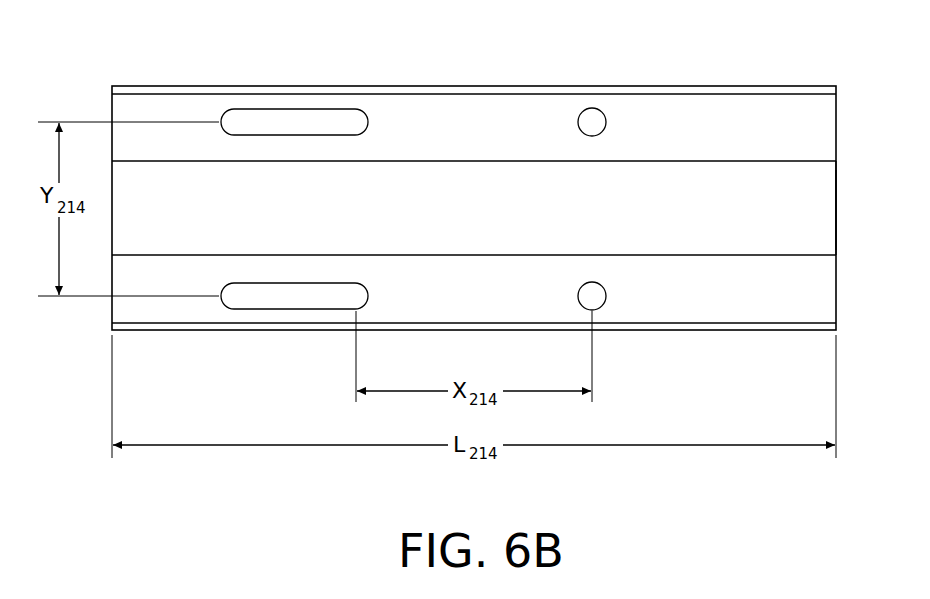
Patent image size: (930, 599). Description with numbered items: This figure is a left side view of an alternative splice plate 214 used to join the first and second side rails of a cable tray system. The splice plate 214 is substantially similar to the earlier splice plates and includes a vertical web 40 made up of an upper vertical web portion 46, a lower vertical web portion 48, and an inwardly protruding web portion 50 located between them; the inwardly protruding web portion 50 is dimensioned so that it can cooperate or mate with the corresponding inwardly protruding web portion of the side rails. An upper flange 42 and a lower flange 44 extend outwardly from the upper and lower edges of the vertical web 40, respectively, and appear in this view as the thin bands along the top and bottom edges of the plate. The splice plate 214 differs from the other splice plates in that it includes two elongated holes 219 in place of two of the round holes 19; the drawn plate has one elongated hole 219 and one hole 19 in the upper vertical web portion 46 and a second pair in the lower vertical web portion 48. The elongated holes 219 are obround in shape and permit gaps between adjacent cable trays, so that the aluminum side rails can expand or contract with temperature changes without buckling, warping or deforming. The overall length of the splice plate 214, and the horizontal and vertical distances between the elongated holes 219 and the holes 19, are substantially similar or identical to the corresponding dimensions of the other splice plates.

The splice plate 214 is at (465, 63).
The elongated hole 219 is at (277, 108).
The hole 19 is at (593, 108).
The upper flange 42 is at (822, 88).
The lower flange 44 is at (838, 325).
The upper vertical web portion 46 is at (830, 115).
The lower vertical web portion 48 is at (828, 288).
The vertical web 40 is at (828, 188).
The inwardly protruding web portion 50 is at (830, 218).